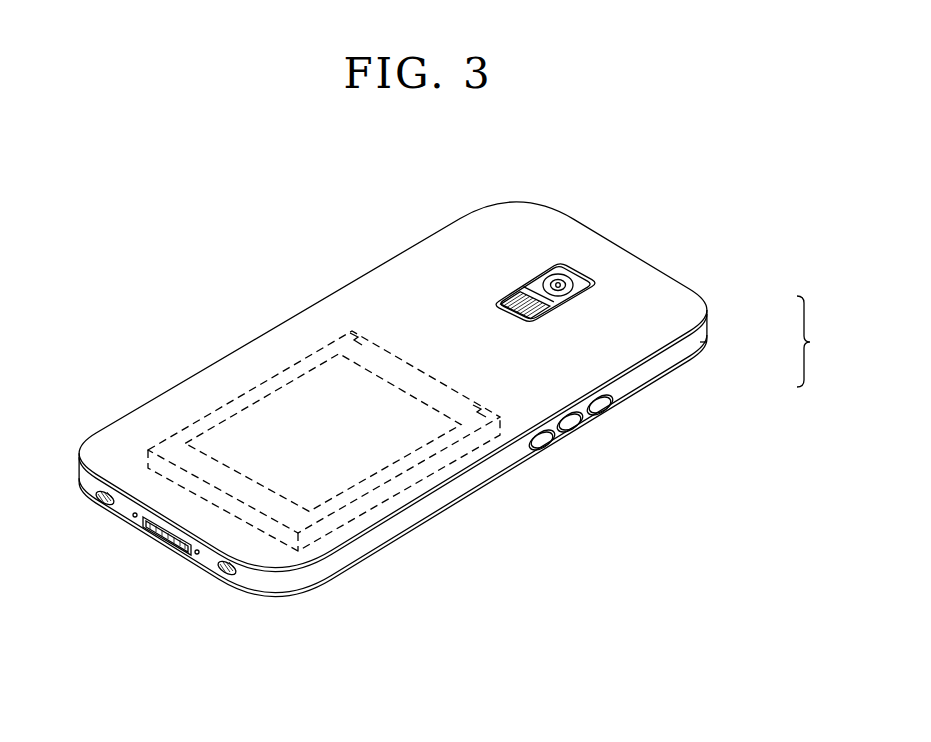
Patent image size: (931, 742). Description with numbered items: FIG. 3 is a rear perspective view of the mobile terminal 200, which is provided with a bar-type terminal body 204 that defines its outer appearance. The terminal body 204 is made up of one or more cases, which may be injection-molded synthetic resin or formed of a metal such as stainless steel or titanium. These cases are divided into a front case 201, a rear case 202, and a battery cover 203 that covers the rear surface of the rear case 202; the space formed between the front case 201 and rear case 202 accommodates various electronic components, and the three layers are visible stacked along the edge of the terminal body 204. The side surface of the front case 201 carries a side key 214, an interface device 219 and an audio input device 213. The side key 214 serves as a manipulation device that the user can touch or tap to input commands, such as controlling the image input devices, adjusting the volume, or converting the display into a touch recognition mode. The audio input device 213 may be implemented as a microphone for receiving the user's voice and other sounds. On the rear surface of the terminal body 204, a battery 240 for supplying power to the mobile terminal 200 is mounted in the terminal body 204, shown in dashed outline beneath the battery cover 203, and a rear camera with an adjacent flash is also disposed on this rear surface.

The mobile terminal 200 is at (454, 415).
The front case 201 is at (697, 365).
The rear case 202 is at (707, 342).
The battery cover 203 is at (711, 318).
The terminal body 204 is at (819, 341).
The audio input device 213 is at (194, 556).
The side key 214 is at (578, 424).
The interface device 219 is at (157, 523).
The battery 240 is at (262, 390).